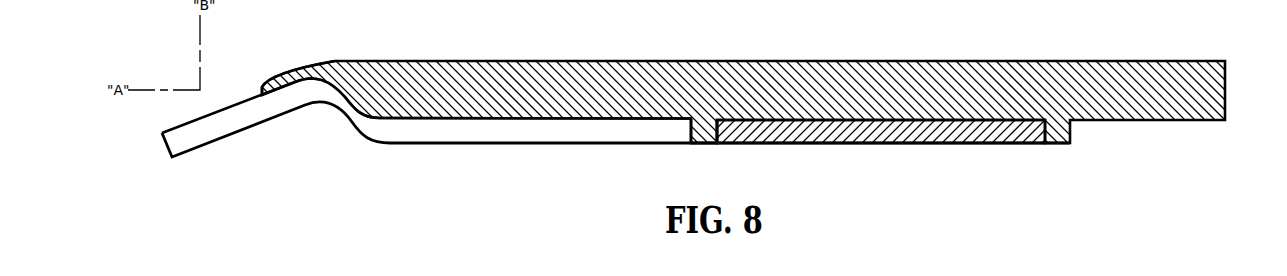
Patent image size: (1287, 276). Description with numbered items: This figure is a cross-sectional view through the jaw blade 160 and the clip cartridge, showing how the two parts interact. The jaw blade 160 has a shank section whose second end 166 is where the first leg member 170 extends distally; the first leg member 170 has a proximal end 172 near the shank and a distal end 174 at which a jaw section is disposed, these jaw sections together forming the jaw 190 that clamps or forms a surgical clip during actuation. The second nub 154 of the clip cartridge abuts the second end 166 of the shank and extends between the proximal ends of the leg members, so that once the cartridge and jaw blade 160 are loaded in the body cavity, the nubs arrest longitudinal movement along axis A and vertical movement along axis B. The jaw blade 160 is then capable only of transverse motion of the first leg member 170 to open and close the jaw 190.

The jaw blade 160 is at (600, 52).
The first leg member 170 is at (422, 118).
The distal end of first leg member 174 is at (245, 100).
The jaw 190 is at (166, 143).
The second nub 154 is at (692, 129).
The proximal end of first leg member 172 is at (676, 137).
The second end of shank section 166 is at (718, 136).